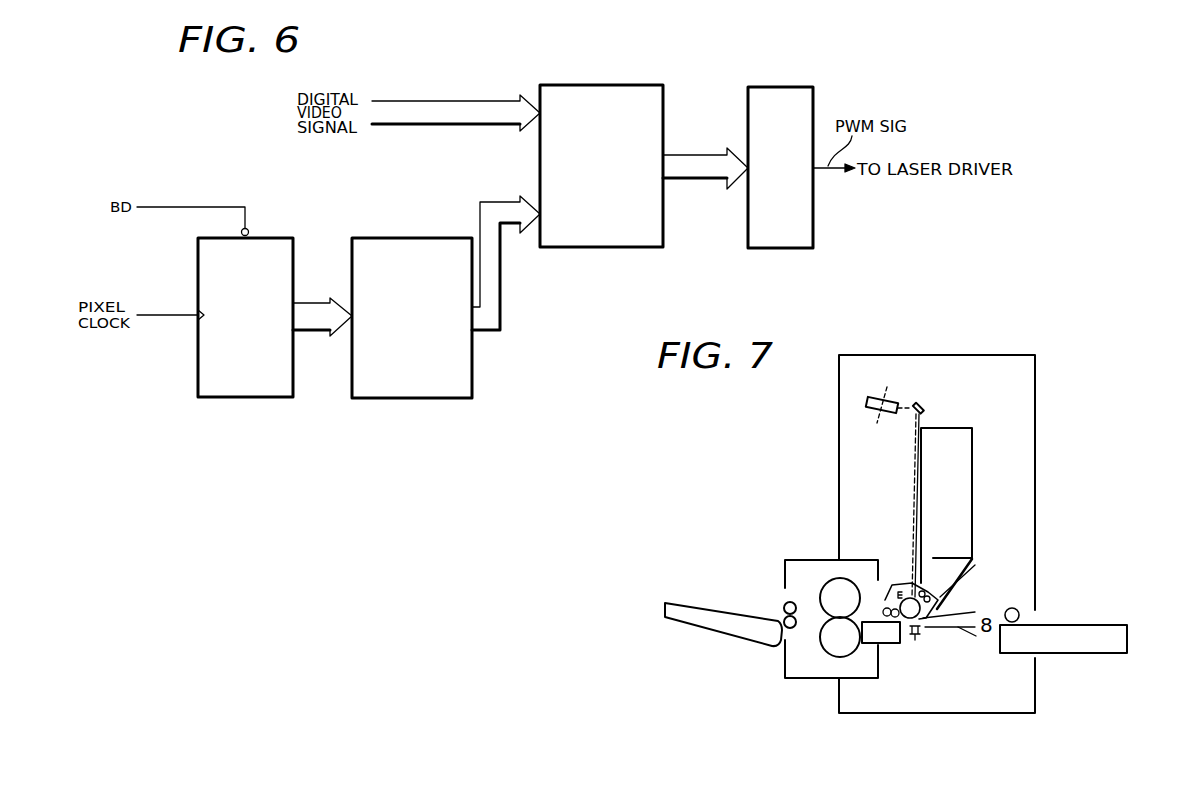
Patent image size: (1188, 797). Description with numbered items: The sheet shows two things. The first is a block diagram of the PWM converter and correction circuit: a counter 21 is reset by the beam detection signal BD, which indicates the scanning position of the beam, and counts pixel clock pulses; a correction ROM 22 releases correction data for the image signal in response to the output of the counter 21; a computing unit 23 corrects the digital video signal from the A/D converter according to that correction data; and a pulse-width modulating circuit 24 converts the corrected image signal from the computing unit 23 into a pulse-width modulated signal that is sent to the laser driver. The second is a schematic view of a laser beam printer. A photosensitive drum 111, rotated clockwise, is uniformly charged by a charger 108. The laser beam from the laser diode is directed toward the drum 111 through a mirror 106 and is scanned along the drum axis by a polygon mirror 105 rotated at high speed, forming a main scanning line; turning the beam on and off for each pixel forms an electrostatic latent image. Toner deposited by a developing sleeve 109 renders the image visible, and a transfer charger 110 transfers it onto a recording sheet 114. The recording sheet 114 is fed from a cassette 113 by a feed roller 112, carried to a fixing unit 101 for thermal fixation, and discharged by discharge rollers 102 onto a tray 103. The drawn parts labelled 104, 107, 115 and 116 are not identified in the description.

In FIG. 6, the counter 21 is at (262, 238).
In FIG. 6, the correction ROM 22 is at (432, 238).
In FIG. 6, the computing unit 23 is at (630, 85).
In FIG. 6, the pulse-width modulating circuit 24 is at (780, 87).
In FIG. 7, the fixing unit 101 is at (785, 563).
In FIG. 7, the discharge rollers 102 is at (783, 604).
In FIG. 7, the tray 103 is at (735, 628).
In FIG. 7, the registration rollers 104 is at (830, 580).
In FIG. 7, the polygon mirror 105 is at (871, 413).
In FIG. 7, the mirror 106 is at (922, 401).
In FIG. 7, the developing unit 107 is at (965, 428).
In FIG. 7, the charger 108 is at (894, 584).
In FIG. 7, the developing sleeve 109 is at (950, 601).
In FIG. 7, the transfer charger 110 is at (893, 645).
In FIG. 7, the photosensitive drum 111 is at (915, 640).
In FIG. 7, the feed roller 112 is at (1020, 612).
In FIG. 7, the cassette 113 is at (1127, 638).
In FIG. 7, the recording sheet 114 is at (975, 636).
In FIG. 7, the charger 115 is at (922, 590).
In FIG. 7, the developing sleeve 116 is at (975, 565).